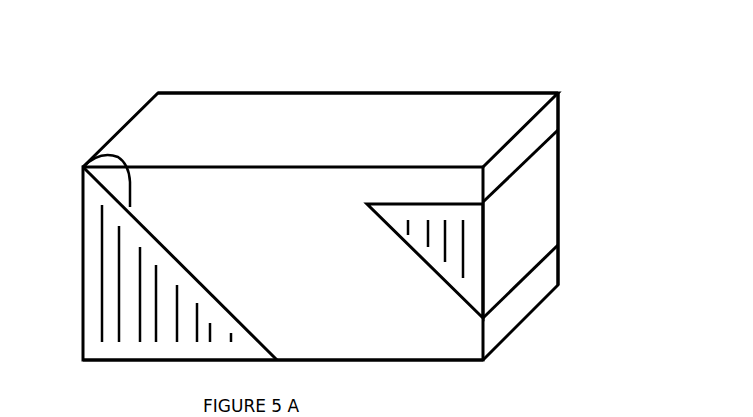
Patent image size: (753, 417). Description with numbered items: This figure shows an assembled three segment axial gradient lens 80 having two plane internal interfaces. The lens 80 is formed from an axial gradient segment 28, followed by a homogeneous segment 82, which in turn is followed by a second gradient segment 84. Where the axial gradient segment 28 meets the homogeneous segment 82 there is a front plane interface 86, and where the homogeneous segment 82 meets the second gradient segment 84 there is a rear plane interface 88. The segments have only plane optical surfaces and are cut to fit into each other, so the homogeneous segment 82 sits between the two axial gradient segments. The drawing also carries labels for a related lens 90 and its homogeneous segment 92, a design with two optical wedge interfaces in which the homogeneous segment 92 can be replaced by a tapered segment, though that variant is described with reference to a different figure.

The lens 80 is at (335, 75).
The homogeneous segment 82 is at (490, 93).
The second gradient segment 84 is at (558, 185).
The front plane interface 86 is at (95, 154).
The rear plane interface 88 is at (408, 248).
The axial gradient segment 28 is at (113, 360).
The lens 90 is at (578, 416).
The homogeneous segment 92 is at (708, 407).